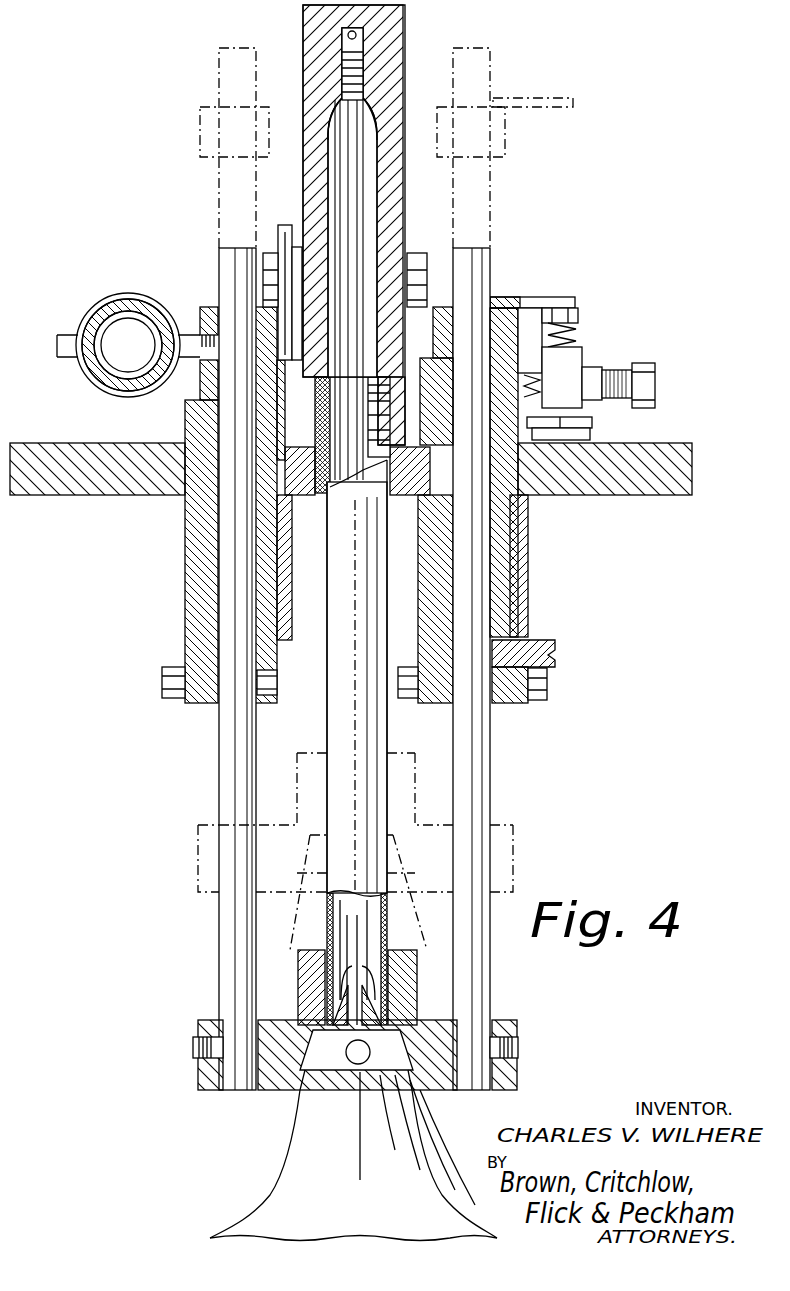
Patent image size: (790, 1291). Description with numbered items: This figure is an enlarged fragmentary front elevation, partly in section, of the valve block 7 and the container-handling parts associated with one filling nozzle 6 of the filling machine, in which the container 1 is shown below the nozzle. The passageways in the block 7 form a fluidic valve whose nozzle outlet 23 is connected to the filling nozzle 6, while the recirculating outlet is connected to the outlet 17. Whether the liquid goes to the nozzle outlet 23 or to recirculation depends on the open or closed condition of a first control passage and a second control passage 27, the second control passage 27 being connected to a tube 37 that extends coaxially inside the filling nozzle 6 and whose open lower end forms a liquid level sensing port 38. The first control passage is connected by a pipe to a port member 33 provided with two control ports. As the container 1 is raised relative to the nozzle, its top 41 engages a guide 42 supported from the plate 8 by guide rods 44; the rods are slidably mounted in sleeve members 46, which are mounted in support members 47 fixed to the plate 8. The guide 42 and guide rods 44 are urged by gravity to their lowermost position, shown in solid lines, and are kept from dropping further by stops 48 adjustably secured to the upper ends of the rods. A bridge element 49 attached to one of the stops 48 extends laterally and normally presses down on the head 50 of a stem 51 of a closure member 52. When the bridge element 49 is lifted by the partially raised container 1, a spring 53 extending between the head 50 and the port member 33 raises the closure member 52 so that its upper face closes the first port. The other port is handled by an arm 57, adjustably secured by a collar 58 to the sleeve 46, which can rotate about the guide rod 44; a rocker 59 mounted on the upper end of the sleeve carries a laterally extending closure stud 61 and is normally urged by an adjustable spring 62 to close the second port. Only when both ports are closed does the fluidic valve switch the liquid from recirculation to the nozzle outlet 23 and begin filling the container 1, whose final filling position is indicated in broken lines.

The mold / casting bell 1 is at (300, 916).
The filling nozzle 6 is at (358, 686).
The valve block 7 is at (292, 34).
The plate 8 is at (568, 487).
The outlet 17 is at (112, 370).
The nozzle outlet 23 is at (372, 118).
The second control passage 27 is at (358, 33).
The port member 33 is at (574, 373).
The tube 37 is at (355, 205).
The liquid level sensing port 38 is at (346, 1050).
The container top 41 is at (375, 1070).
The guide 42 is at (200, 880).
The guide rods 44 is at (225, 205).
The sleeve members 46 is at (195, 585).
The support members 47 is at (518, 612).
The stops 48 is at (200, 133).
The bridge element 49 is at (553, 98).
The head 50 is at (582, 312).
The stem 51 is at (580, 428).
The closure member 52 is at (603, 412).
The spring 53 is at (582, 342).
The arm 57 is at (545, 648).
The collar 58 is at (547, 684).
The rocker 59 is at (433, 372).
The closure stud 61 is at (533, 375).
The spring 62 is at (542, 396).